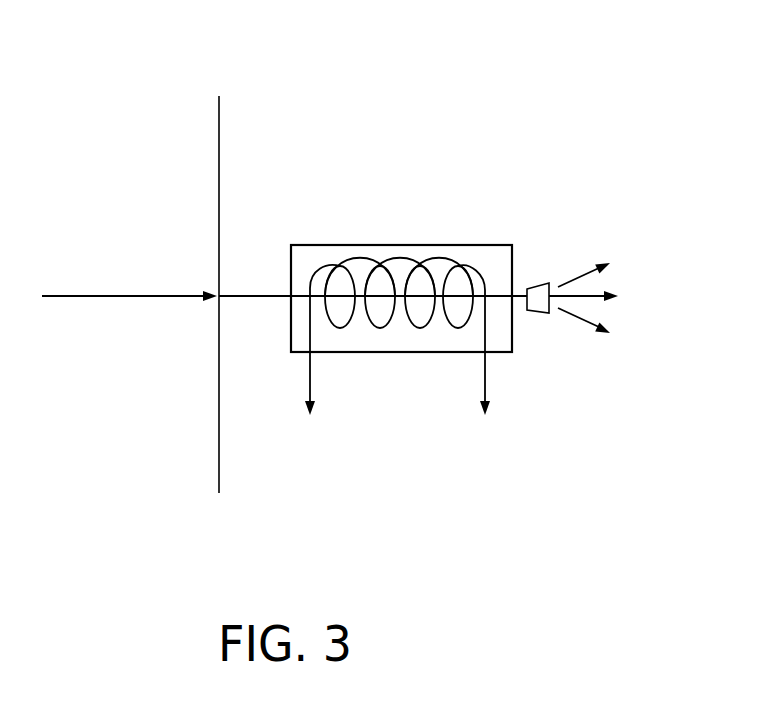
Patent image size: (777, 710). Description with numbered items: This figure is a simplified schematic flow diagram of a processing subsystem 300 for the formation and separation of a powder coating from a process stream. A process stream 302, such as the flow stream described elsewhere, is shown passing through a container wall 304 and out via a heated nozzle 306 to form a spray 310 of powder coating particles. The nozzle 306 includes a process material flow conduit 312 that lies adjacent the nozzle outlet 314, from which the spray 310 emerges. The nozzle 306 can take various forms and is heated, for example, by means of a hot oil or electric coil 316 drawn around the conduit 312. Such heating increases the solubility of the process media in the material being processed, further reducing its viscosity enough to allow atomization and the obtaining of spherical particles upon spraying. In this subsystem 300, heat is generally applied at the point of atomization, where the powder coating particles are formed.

The processing subsystem 300 is at (412, 157).
The process stream 302 is at (123, 295).
The container wall 304 is at (218, 212).
The heated nozzle 306 is at (519, 282).
The spray 310 is at (600, 288).
The process material flow conduit 312 is at (303, 295).
The nozzle outlet 314 is at (545, 313).
The electric coil 316 is at (417, 328).